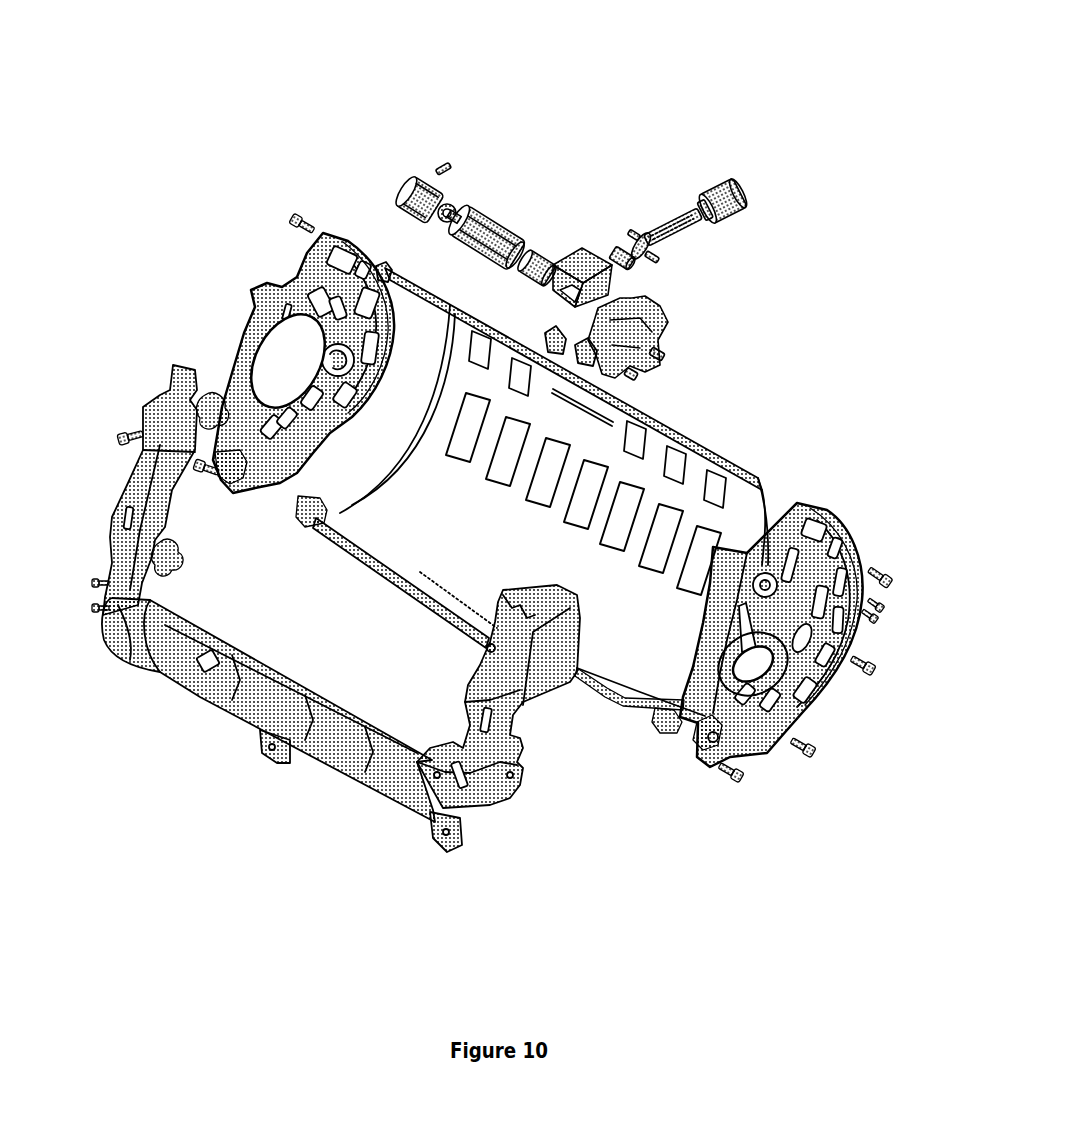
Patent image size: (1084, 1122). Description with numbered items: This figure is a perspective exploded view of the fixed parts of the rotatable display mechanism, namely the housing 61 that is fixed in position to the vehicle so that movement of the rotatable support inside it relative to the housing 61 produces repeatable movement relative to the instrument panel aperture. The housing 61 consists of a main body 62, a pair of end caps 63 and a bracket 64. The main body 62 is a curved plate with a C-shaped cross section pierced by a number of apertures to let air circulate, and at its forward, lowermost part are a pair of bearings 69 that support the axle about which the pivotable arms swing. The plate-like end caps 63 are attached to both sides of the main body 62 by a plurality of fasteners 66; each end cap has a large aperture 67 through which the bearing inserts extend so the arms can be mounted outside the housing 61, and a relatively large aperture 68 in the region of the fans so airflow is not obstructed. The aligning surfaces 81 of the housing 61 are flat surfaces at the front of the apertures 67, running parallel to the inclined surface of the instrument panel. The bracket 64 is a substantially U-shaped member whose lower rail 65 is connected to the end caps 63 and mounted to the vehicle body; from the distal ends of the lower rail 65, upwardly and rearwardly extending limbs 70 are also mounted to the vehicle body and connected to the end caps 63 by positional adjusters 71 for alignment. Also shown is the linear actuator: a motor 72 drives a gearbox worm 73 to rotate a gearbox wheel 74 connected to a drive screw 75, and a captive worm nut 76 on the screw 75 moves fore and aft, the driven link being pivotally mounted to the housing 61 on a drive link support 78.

The housing 61 is at (338, 138).
The main body 62 is at (738, 490).
The end caps 63 is at (262, 330).
The bracket 64 is at (495, 792).
The lower rail 65 is at (302, 745).
The fasteners 66 is at (290, 218).
The large aperture 67 is at (220, 412).
The relatively large aperture 68 is at (327, 432).
The bearings 69 is at (300, 506).
The limbs 70 is at (135, 475).
The positional adjusters 71 is at (217, 397).
The motor 72 is at (485, 222).
The gearbox worm 73 is at (538, 258).
The gearbox wheel 74 is at (620, 252).
The drive screw 75 is at (687, 232).
The captive worm nut 76 is at (725, 187).
The drive link support 78 is at (655, 328).
The aligning surfaces 81 is at (295, 387).